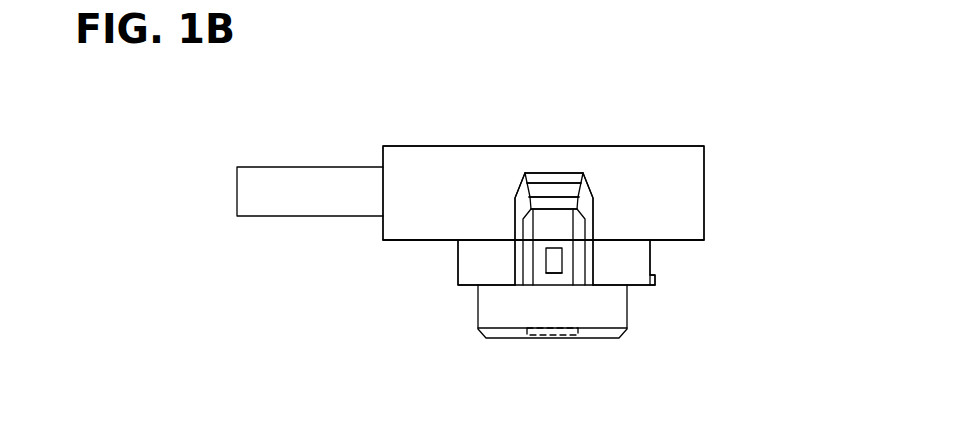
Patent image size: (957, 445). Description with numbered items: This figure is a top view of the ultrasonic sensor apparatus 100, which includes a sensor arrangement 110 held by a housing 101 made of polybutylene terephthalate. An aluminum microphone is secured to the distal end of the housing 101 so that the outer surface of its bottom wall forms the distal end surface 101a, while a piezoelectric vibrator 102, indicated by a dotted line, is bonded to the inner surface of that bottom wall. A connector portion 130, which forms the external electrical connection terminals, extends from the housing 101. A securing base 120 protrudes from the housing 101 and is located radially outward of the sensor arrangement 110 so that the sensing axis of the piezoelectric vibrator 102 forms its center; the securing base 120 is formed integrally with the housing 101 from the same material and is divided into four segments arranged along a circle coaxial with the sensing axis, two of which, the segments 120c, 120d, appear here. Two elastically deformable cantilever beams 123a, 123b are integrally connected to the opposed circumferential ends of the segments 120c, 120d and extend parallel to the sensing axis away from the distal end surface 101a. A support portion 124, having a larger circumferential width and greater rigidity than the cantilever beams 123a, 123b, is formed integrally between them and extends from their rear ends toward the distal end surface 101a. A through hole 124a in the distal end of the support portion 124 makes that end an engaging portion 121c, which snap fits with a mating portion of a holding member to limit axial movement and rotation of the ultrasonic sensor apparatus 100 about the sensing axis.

The ultrasonic sensor apparatus 100 is at (742, 110).
The housing 101 is at (687, 160).
The distal end surface 101a is at (493, 337).
The piezoelectric vibrator 102 is at (560, 338).
The sensor arrangement 110 is at (722, 192).
The securing base 120 is at (668, 285).
The segment 120c is at (473, 265).
The segment 120d is at (635, 267).
The engaging portion 121c is at (553, 274).
The cantilever beam 123a is at (518, 213).
The cantilever beam 123b is at (588, 230).
The support portion 124 is at (557, 168).
The through hole 124a is at (548, 263).
The connector portion 130 is at (315, 187).